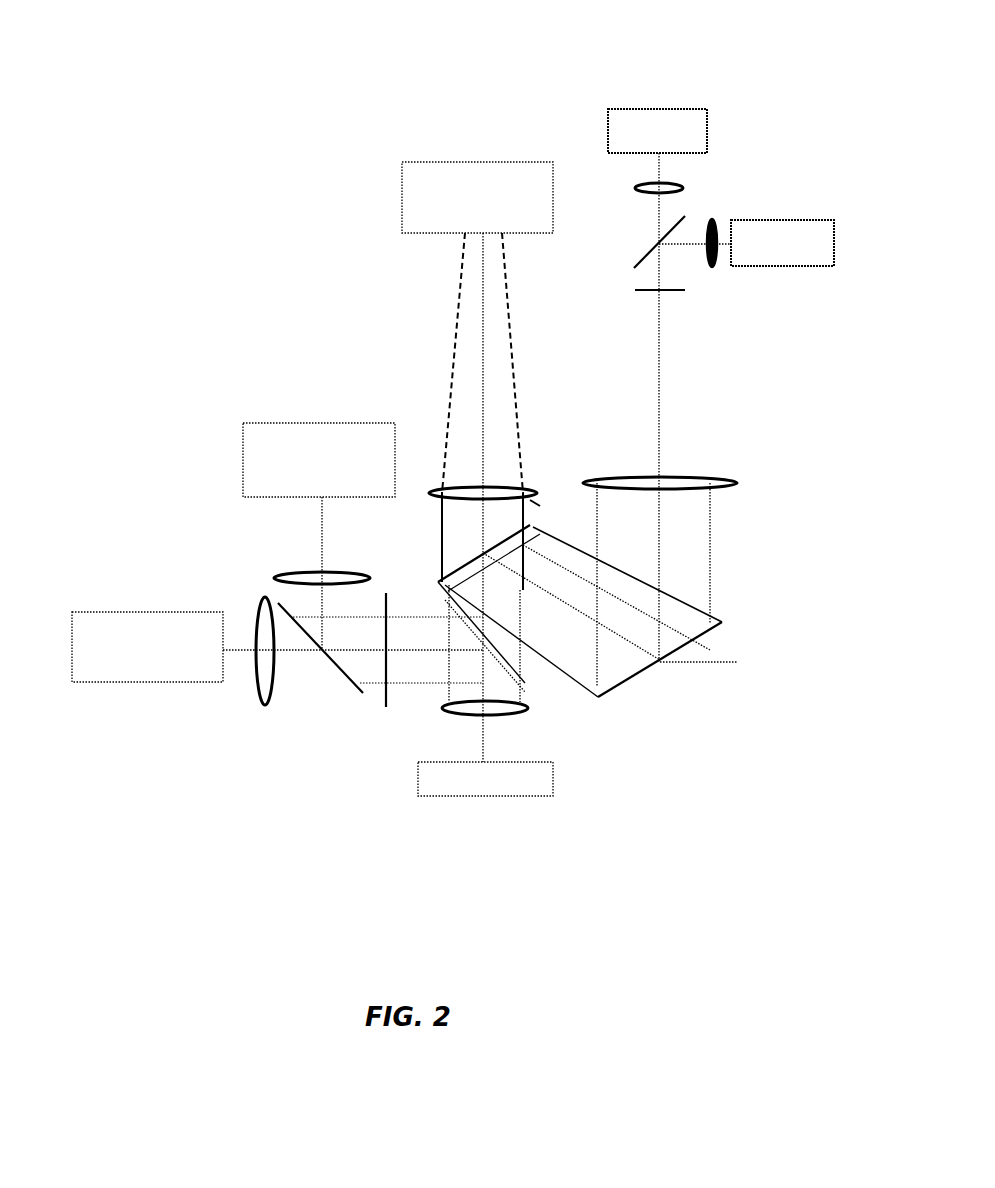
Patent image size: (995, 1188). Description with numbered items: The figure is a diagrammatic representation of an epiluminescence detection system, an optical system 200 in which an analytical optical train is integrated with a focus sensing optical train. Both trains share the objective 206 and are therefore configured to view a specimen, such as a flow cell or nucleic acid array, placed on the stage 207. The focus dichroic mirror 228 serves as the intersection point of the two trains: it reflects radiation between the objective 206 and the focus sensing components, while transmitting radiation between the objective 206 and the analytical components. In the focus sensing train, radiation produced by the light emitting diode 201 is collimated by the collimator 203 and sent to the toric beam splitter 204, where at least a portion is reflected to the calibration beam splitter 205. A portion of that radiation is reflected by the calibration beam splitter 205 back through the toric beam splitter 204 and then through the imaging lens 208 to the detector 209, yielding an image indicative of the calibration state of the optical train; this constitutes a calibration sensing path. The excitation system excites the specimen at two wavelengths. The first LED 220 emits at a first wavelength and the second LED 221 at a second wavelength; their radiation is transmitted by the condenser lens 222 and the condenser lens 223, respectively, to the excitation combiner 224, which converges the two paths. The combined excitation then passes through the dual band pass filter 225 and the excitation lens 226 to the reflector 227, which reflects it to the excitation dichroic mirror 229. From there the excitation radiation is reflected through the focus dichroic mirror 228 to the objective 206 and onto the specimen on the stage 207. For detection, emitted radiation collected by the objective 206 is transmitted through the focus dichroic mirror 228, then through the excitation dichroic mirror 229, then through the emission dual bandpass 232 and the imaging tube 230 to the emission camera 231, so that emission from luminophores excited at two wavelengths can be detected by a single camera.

The optical system 200 is at (287, 213).
The light emitting diode 201 is at (258, 438).
The collimator 203 is at (300, 578).
The toric beam splitter 204 is at (332, 667).
The calibration beam splitter 205 is at (385, 700).
The objective 206 is at (518, 717).
The stage 207 is at (518, 783).
The imaging lens 208 is at (265, 682).
The detector 209 is at (95, 633).
The first LED 220 is at (622, 125).
The second LED 221 is at (815, 233).
The condenser lens 222 is at (683, 187).
The condenser lens 223 is at (712, 268).
The excitation combiner 224 is at (640, 260).
The dual band pass filter 225 is at (670, 295).
The excitation lens 226 is at (714, 477).
The reflector 227 is at (712, 632).
The focus dichroic mirror 228 is at (517, 677).
The excitation dichroic mirror 229 is at (440, 582).
The imaging tube 230 is at (462, 487).
The emission camera 231 is at (422, 187).
The emission dual bandpass 232 is at (538, 503).